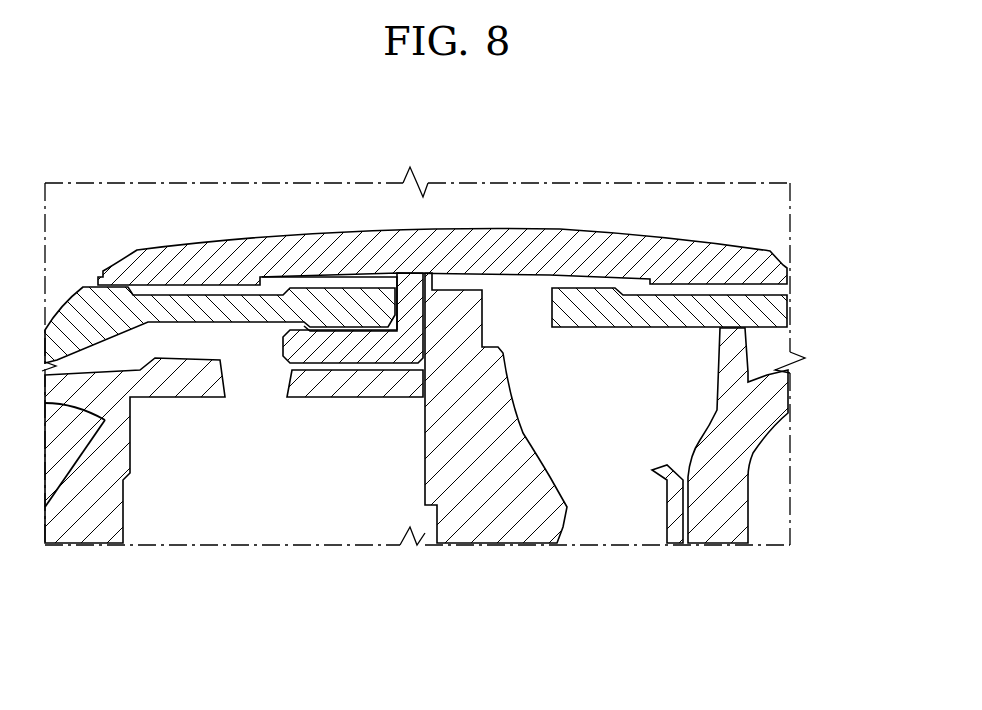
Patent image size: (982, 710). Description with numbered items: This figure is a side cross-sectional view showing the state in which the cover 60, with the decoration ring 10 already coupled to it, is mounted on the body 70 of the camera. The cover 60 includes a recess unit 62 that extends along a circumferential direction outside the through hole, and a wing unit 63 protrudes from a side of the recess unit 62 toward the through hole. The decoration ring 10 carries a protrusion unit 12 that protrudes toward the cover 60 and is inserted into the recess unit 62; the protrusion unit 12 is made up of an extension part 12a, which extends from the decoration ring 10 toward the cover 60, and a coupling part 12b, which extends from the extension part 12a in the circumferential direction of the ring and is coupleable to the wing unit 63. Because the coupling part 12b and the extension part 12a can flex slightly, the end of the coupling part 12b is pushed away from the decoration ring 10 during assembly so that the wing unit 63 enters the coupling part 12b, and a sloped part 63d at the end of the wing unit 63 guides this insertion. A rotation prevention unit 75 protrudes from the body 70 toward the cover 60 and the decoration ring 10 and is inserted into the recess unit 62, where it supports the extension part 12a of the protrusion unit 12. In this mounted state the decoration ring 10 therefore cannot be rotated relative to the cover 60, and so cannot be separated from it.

The decoration ring 10 is at (623, 233).
The protrusion unit 12 is at (356, 468).
The extension part 12a is at (407, 317).
The coupling part 12b is at (318, 352).
The cover 60 is at (708, 225).
The recess unit 62 is at (552, 308).
The wing unit 63 is at (221, 243).
The sloped part 63d is at (383, 327).
The body 70 is at (416, 402).
The rotation prevention unit 75 is at (470, 305).